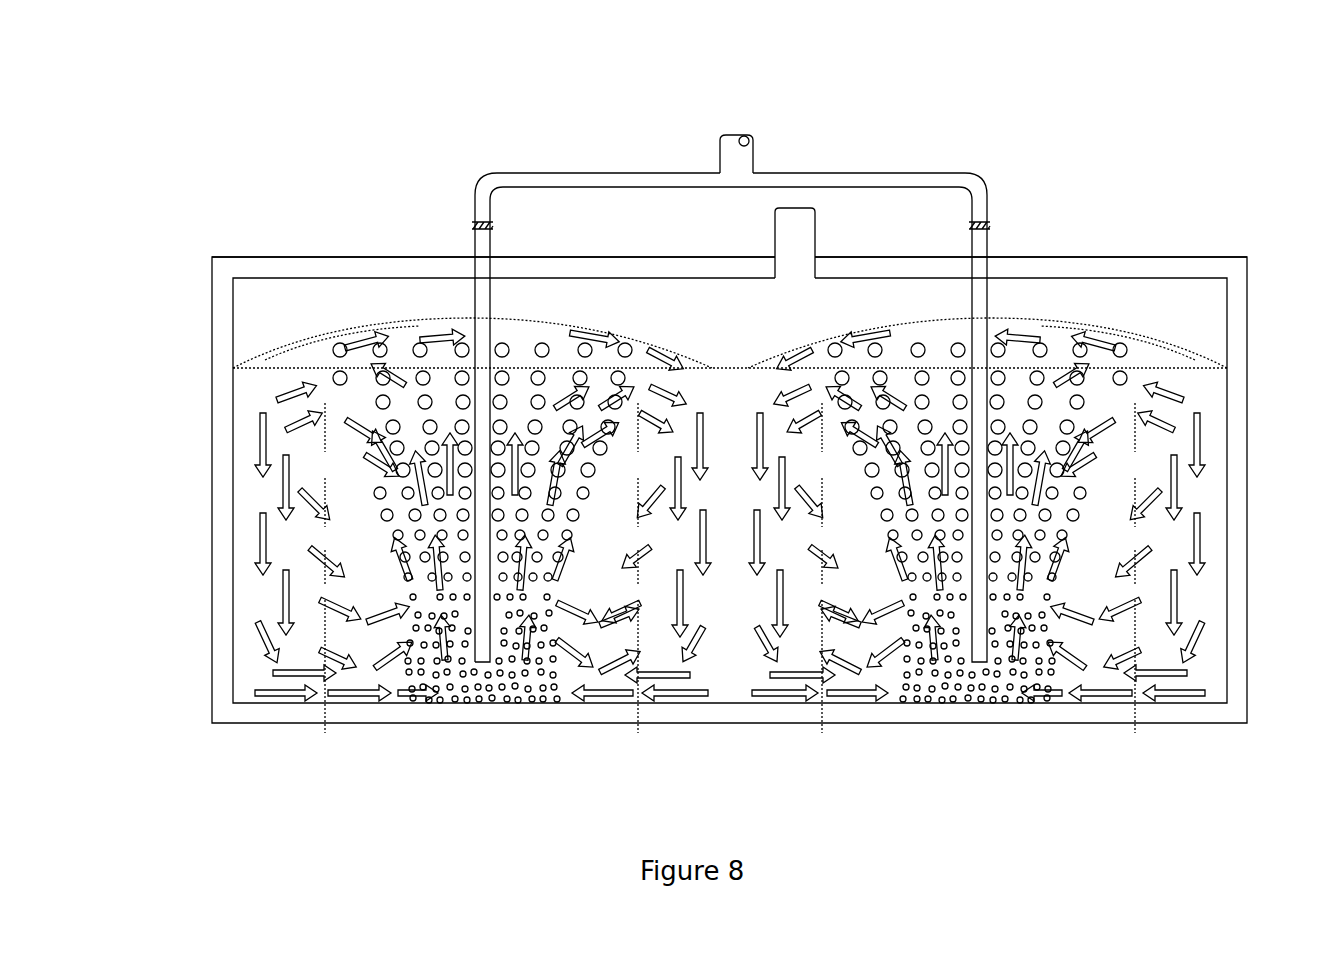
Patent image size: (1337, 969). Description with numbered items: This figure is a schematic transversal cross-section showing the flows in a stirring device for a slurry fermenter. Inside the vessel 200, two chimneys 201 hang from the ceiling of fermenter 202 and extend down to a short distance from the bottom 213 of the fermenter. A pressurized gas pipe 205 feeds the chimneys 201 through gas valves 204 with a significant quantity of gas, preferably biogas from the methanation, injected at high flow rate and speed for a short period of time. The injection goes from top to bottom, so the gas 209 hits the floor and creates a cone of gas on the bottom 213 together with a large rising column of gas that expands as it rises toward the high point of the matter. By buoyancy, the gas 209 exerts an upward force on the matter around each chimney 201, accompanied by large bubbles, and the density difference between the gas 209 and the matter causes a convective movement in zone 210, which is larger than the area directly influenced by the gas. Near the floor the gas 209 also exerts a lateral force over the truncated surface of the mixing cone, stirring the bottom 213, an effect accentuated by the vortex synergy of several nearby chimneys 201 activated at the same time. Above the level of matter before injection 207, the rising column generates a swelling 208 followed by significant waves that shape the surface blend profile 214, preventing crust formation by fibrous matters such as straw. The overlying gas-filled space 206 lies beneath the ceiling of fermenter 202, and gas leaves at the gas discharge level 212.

The vessel 200 is at (365, 723).
The chimney 201 is at (473, 238).
The ceiling of fermenter 202 is at (1107, 268).
The gas valve 204 is at (482, 213).
The pressurized gas pipe 205 is at (733, 150).
The overlying gas-filled space 206 is at (1187, 312).
The level of matter before injection 207 is at (240, 368).
The swelling 208 is at (356, 323).
The gas 209 is at (453, 685).
The zone of convective movement 210 is at (1085, 685).
The gas discharge level 212 is at (803, 230).
The bottom of the fermenter 213 is at (725, 685).
The surface blend profile 214 is at (1205, 543).